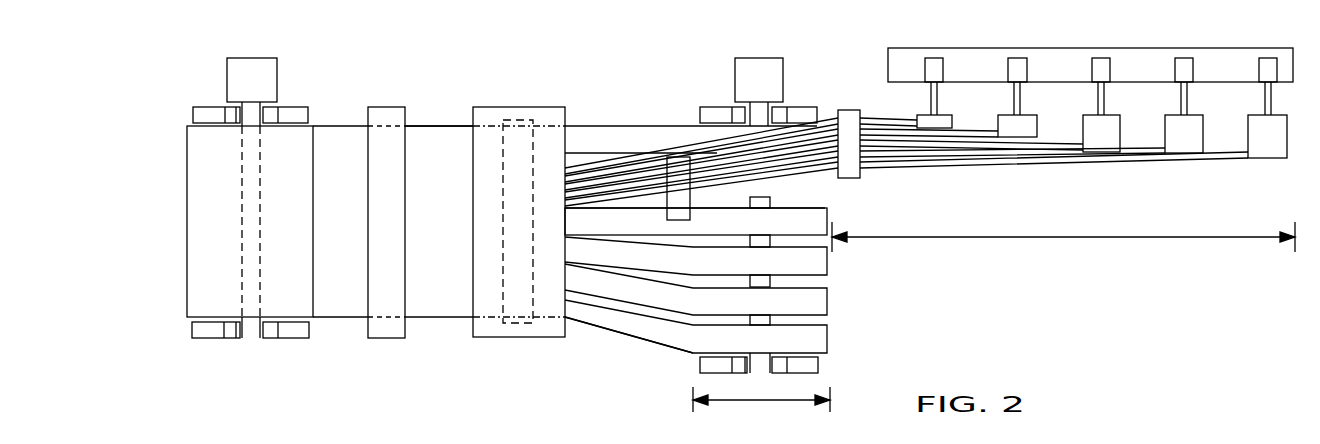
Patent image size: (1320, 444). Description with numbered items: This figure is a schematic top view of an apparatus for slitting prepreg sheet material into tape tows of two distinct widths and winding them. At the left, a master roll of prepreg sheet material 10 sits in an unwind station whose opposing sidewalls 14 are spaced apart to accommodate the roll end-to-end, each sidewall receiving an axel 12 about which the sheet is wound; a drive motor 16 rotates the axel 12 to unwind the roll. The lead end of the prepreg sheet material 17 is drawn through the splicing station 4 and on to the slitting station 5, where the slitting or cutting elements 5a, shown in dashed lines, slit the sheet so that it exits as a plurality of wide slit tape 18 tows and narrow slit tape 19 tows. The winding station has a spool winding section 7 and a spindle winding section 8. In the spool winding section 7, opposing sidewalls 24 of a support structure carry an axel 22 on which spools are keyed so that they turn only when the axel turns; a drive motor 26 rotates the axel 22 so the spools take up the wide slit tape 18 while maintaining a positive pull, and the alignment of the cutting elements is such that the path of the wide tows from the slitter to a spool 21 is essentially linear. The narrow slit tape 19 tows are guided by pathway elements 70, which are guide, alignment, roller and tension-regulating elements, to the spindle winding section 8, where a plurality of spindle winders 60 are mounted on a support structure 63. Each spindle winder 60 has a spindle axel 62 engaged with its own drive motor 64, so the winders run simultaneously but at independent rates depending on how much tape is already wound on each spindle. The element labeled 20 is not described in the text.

The prepreg sheet material 10 is at (230, 181).
The axel 12 is at (250, 338).
The sidewalls 14 is at (305, 112).
The drive motor 16 is at (265, 70).
The splicing station 4 is at (388, 338).
The prepreg sheet material 17 is at (436, 126).
The slitting station 5 is at (488, 337).
The slitting or cutting elements 5a is at (510, 262).
The narrow slit tape 19 is at (630, 165).
The pathway elements 70 is at (678, 157).
The drive motor 26 is at (740, 68).
The spool 21 is at (820, 228).
The strips 20 is at (825, 303).
The axel 22 is at (757, 278).
The sidewalls 24 is at (700, 365).
The wide slit tape 18 is at (605, 330).
The spool winding section 7 is at (761, 406).
The spindle winding section 8 is at (1063, 244).
The support structure 63 is at (1056, 60).
The drive motor 64 is at (1184, 65).
The spindle axel 62 is at (1104, 95).
The spindle winders 60 is at (1268, 158).